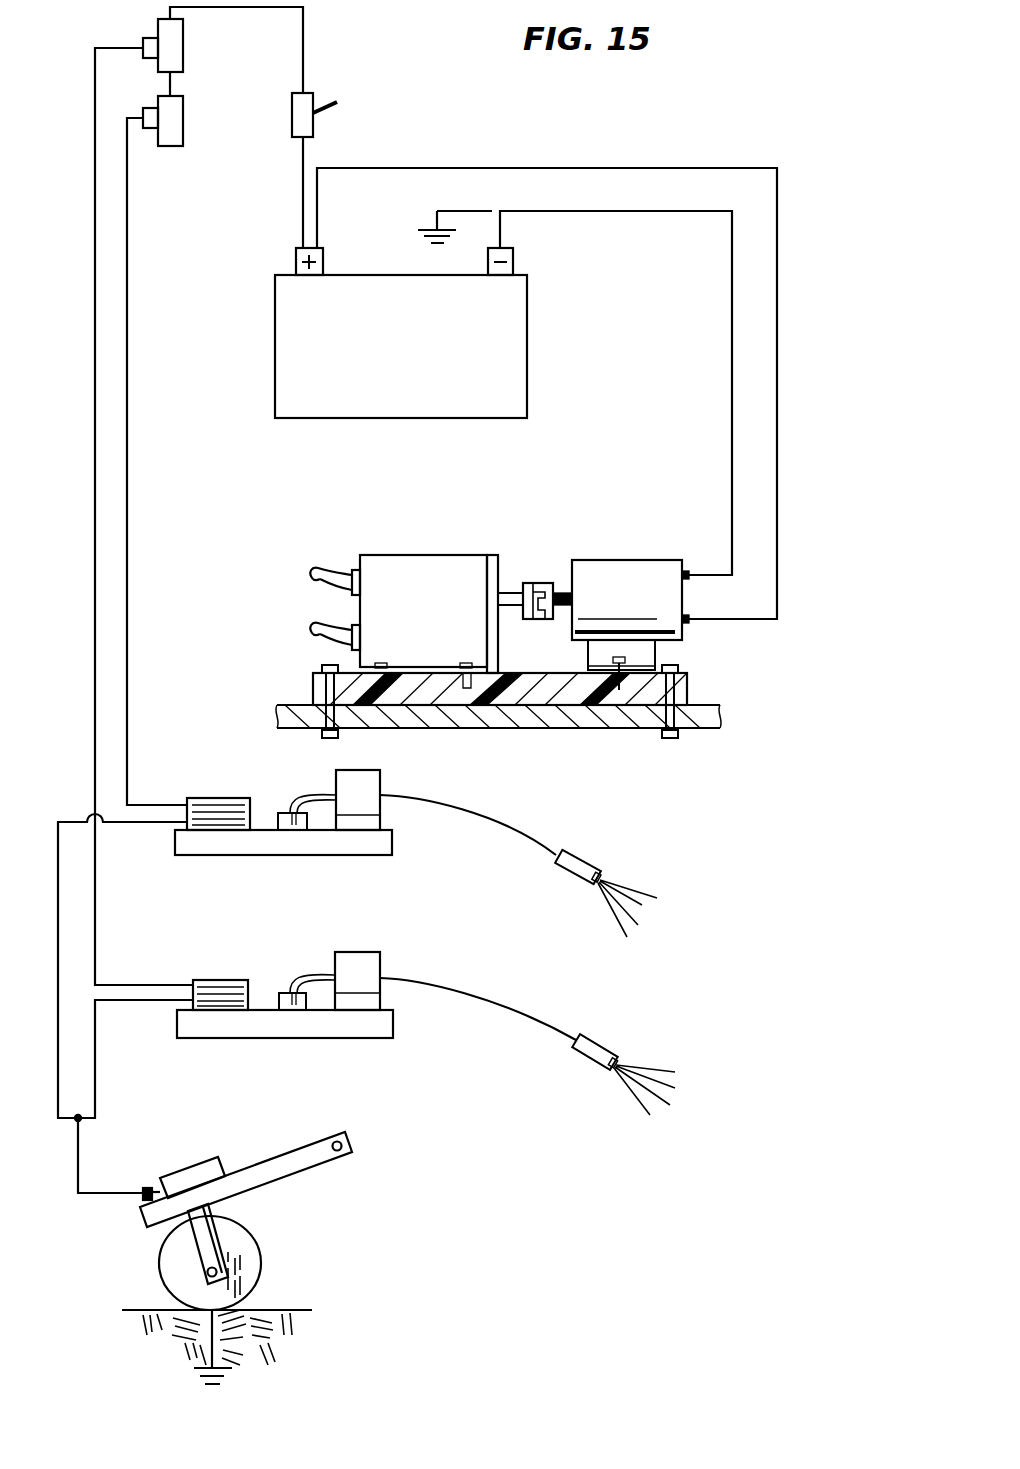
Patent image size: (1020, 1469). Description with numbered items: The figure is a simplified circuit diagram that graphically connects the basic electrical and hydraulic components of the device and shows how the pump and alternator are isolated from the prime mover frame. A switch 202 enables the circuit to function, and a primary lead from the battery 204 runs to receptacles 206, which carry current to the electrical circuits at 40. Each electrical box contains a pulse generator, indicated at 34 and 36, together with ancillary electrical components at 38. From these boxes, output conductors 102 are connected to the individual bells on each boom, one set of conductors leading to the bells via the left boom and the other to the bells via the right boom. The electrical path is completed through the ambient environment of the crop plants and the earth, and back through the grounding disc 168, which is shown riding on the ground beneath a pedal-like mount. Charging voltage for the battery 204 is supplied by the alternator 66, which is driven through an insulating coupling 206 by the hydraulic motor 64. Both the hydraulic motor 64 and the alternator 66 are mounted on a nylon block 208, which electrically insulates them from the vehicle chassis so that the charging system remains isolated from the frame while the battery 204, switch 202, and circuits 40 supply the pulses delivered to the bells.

The receptacles / insulating coupling 206 is at (183, 118).
The switch 202 is at (316, 98).
The battery 204 is at (517, 345).
The hydraulic motor 64 is at (443, 556).
The alternator 66 is at (637, 561).
The nylon block 208 is at (690, 686).
The ancillary electrical components 38 is at (222, 798).
The pulse generator 34 is at (372, 782).
The pulse generator 36 is at (372, 962).
The electrical circuits 40 is at (176, 843).
The output conductors 102 is at (532, 843).
The grounding disc 168 is at (248, 1246).